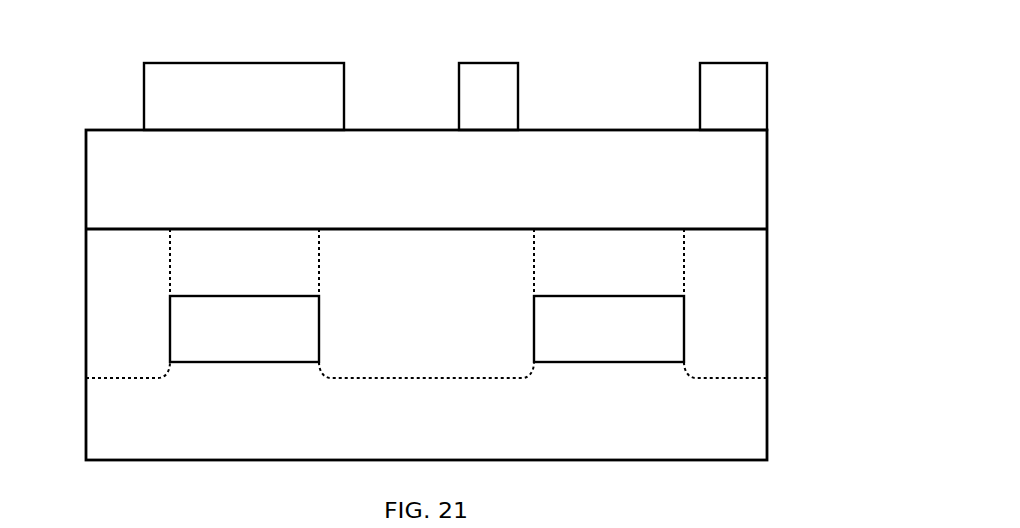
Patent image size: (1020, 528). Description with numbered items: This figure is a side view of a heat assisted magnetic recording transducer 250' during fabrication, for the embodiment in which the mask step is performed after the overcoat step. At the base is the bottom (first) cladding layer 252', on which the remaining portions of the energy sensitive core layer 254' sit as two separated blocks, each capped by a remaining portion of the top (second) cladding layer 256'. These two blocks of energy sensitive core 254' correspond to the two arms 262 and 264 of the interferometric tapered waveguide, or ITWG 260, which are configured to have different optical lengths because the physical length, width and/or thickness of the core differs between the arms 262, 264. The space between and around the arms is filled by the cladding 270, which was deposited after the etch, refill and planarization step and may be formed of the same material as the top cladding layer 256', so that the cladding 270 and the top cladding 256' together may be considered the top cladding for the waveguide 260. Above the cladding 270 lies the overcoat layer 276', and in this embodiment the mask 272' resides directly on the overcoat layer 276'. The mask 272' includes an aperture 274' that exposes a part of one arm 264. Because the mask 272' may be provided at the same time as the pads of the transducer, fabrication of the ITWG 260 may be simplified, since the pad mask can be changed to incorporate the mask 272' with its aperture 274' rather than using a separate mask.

The transducer 250' is at (426, 231).
The mask 272' is at (487, 86).
The aperture 274' is at (671, 55).
The overcoat layer 276' is at (254, 135).
The ITWG 260 is at (293, 212).
The cladding 270 is at (86, 263).
The top cladding layer 256' is at (427, 277).
The arm 262 is at (157, 332).
The arm 264 is at (700, 321).
The bottom cladding layer 252' is at (455, 407).
The energy sensitive core layer 254' is at (419, 426).